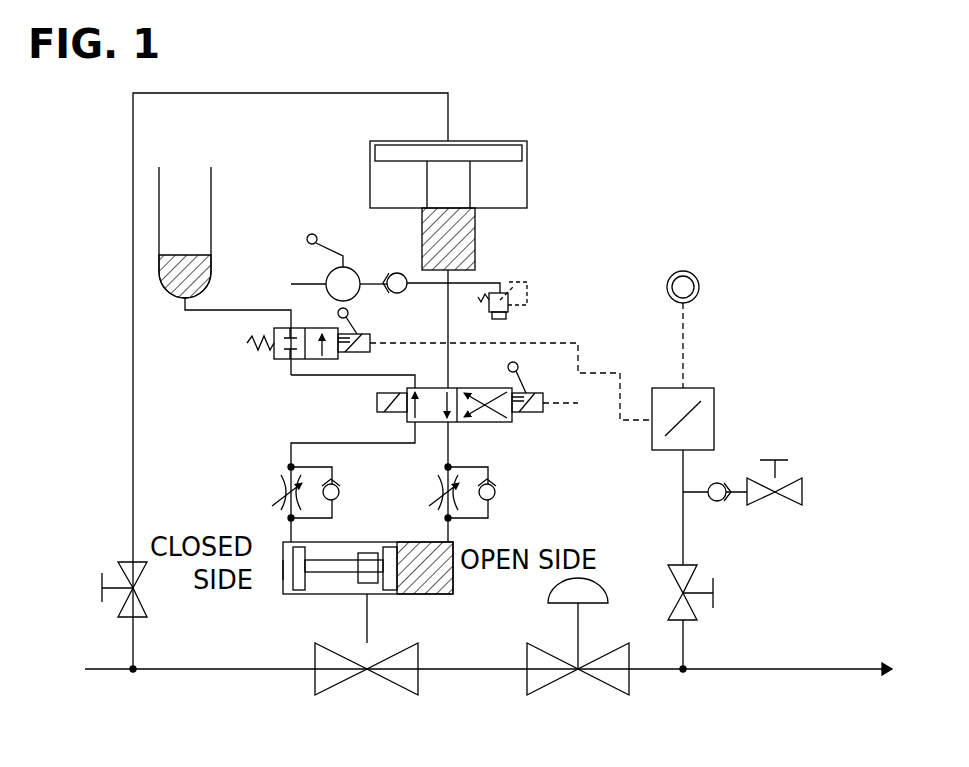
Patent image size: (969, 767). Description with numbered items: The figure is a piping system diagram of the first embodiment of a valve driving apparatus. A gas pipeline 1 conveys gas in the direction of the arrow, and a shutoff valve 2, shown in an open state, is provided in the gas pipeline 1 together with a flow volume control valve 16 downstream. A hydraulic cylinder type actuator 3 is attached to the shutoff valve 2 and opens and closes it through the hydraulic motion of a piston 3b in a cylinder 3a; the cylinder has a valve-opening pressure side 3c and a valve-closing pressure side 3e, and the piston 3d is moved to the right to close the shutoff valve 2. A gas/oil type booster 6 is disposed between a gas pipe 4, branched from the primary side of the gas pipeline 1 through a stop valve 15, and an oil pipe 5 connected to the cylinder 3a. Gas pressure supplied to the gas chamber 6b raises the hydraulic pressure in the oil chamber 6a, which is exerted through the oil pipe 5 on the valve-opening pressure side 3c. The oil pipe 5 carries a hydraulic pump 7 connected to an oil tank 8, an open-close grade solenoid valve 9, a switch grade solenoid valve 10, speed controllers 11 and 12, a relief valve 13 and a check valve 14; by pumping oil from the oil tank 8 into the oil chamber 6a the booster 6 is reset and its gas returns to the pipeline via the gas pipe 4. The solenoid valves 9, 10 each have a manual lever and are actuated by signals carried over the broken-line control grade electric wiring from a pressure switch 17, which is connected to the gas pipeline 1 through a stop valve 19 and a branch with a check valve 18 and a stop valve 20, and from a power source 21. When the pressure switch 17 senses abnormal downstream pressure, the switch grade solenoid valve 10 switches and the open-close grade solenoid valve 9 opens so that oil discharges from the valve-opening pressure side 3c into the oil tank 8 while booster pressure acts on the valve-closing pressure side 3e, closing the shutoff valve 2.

The gas pipeline 1 is at (660, 673).
The shutoff valve 2 is at (398, 685).
The actuator 3 is at (347, 642).
The cylinder 3a is at (330, 596).
The piston 3b is at (395, 594).
The valve-opening pressure side 3c is at (453, 575).
The piston 3d is at (299, 587).
The valve-closing pressure side 3e is at (283, 578).
The gas pipe 4 is at (133, 195).
The oil pipe 5 is at (400, 372).
The gas/oil type booster 6 is at (512, 176).
The oil chamber 6a is at (468, 238).
The gas chamber 6b is at (480, 145).
The hydraulic pump 7 is at (320, 276).
The oil tank 8 is at (170, 242).
The open-close grade solenoid valve 9 is at (273, 353).
The switch grade solenoid valve 10 is at (407, 420).
The speed controller 11 is at (291, 467).
The speed controller 12 is at (428, 500).
The relief valve 13 is at (448, 333).
The check valve 14 is at (507, 295).
The stop valve 15 is at (128, 566).
The flow volume control valve 16 is at (617, 673).
The pressure switch 17 is at (714, 410).
The check valve 18 is at (721, 484).
The stop valve 19 is at (697, 570).
The stop valve 20 is at (790, 495).
The power source 21 is at (700, 292).